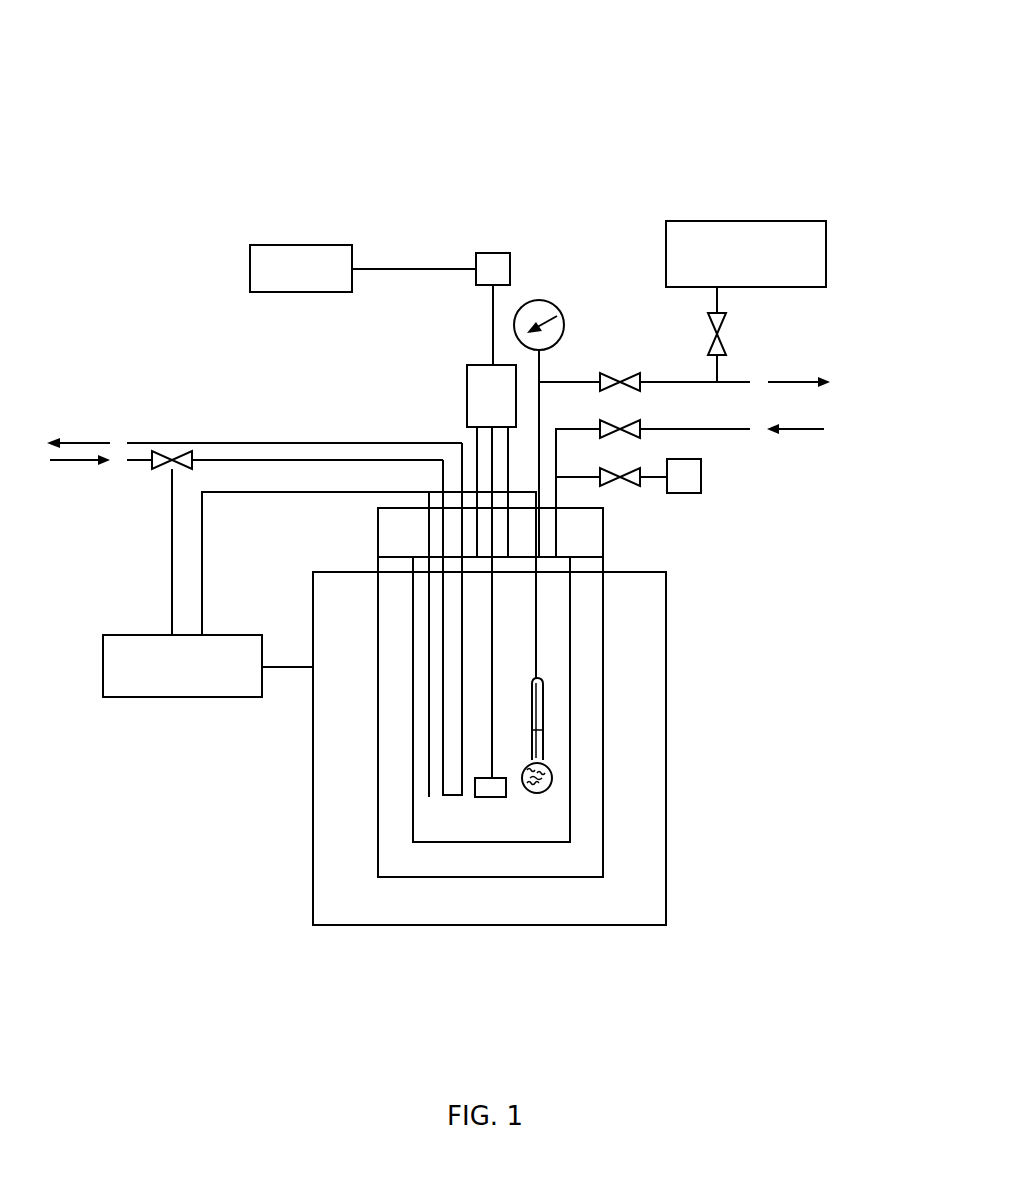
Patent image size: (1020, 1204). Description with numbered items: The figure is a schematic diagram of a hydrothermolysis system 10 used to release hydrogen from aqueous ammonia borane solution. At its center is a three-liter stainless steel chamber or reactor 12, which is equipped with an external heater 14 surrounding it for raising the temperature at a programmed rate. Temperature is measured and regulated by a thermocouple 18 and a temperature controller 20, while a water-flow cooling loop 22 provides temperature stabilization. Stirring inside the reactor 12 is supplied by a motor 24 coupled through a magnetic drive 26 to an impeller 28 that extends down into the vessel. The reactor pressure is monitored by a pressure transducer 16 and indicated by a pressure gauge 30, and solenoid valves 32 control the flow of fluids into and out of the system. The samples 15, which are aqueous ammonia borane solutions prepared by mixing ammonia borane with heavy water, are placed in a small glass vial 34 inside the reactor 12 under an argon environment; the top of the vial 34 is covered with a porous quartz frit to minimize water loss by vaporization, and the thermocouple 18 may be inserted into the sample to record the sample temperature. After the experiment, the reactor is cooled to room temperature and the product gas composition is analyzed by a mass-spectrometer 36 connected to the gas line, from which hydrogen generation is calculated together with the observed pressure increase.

The hydrothermolysis system 10 is at (640, 120).
The reactor 12 is at (604, 711).
The external heater 14 is at (667, 638).
The samples 15 is at (548, 767).
The pressure transducer 16 is at (701, 482).
The thermocouple 18 is at (428, 700).
The temperature controller 20 is at (182, 666).
The water-flow cooling loop 22 is at (443, 758).
The motor 24 is at (301, 268).
The magnetic drive 26 is at (467, 400).
The impeller 28 is at (475, 795).
The pressure gauge 30 is at (542, 303).
The solenoid valves 32 is at (167, 467).
The glass vial 34 is at (553, 786).
The mass-spectrometer 36 is at (746, 254).